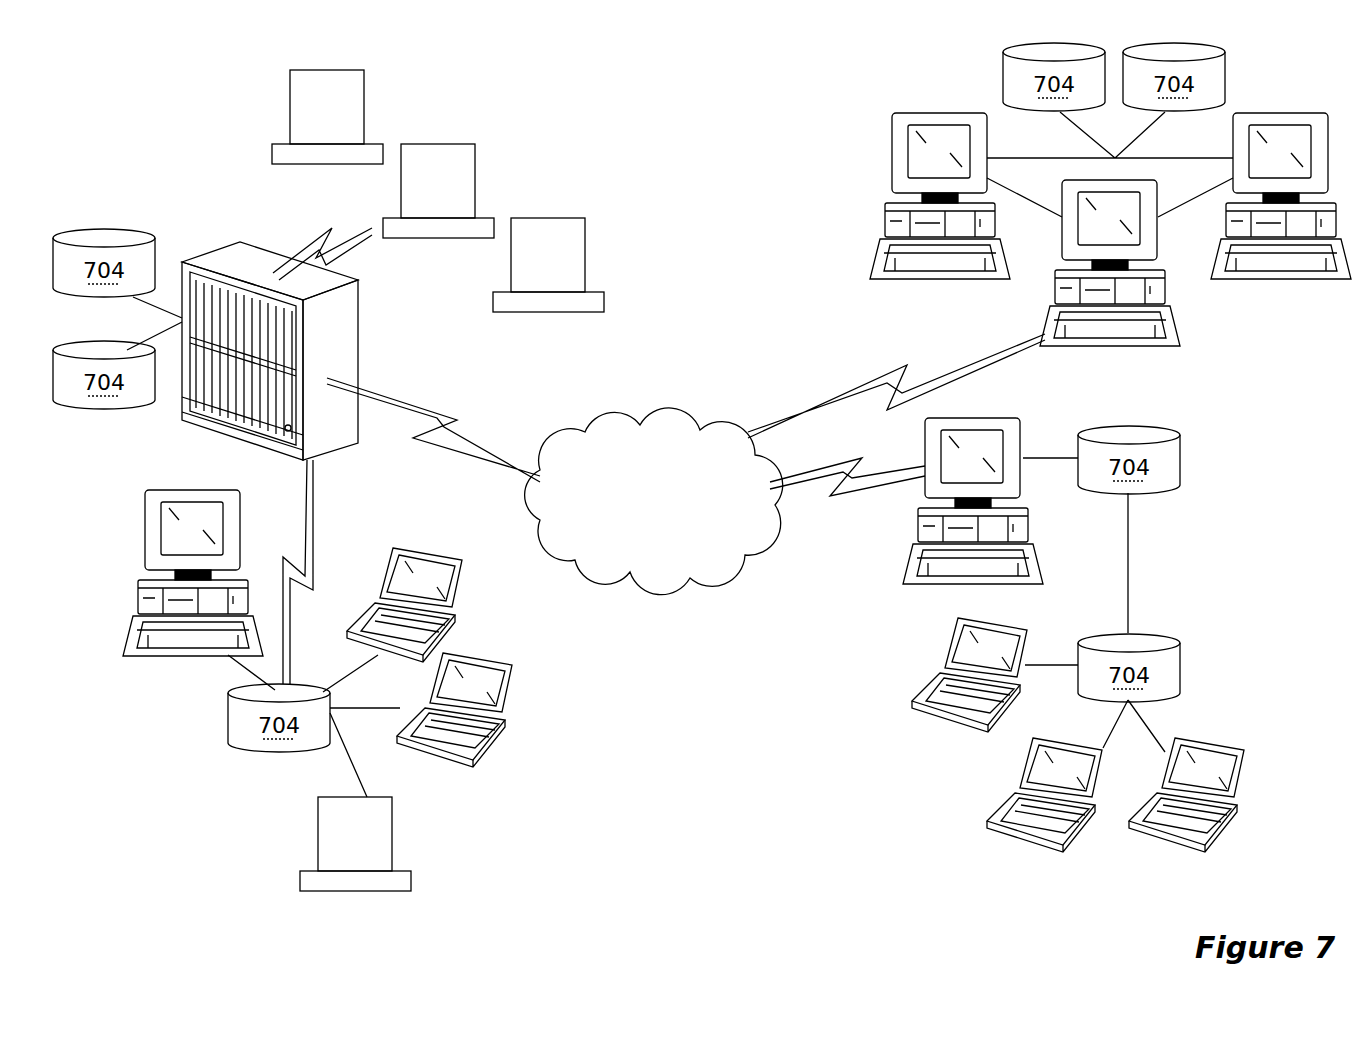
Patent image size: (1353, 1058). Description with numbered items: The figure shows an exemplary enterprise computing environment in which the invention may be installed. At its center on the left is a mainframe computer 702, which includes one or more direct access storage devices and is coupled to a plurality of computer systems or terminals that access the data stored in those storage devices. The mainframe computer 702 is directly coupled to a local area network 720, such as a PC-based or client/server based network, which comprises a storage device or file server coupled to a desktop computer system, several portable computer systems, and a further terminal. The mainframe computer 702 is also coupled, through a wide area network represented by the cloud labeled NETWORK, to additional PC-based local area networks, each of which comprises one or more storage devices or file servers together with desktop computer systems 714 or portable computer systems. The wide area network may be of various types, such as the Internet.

The mainframe computer 702 is at (350, 345).
The desktop computer system 714 is at (908, 113).
The local area network 720 is at (210, 860).